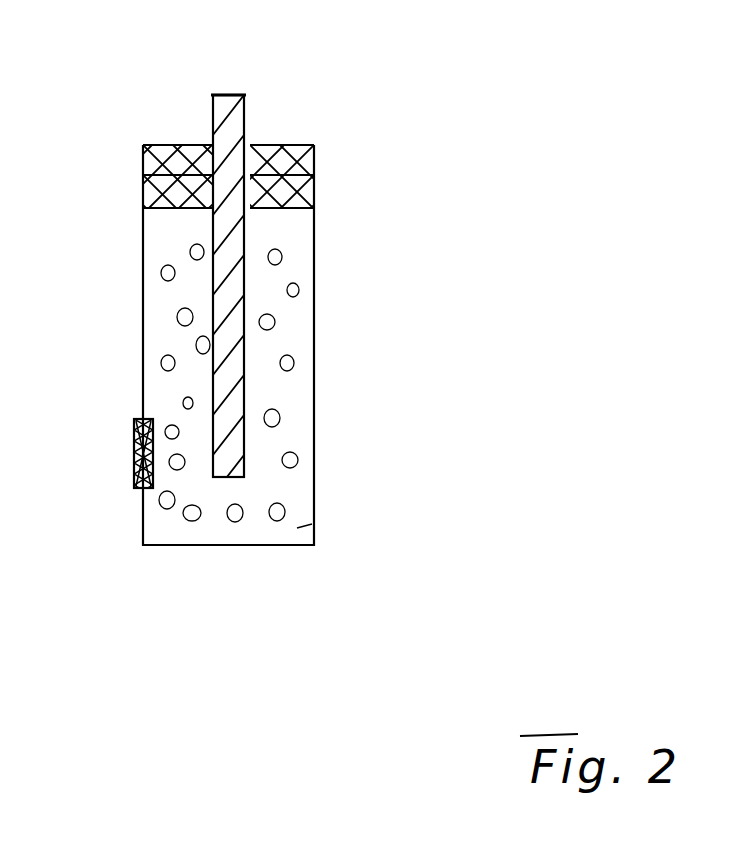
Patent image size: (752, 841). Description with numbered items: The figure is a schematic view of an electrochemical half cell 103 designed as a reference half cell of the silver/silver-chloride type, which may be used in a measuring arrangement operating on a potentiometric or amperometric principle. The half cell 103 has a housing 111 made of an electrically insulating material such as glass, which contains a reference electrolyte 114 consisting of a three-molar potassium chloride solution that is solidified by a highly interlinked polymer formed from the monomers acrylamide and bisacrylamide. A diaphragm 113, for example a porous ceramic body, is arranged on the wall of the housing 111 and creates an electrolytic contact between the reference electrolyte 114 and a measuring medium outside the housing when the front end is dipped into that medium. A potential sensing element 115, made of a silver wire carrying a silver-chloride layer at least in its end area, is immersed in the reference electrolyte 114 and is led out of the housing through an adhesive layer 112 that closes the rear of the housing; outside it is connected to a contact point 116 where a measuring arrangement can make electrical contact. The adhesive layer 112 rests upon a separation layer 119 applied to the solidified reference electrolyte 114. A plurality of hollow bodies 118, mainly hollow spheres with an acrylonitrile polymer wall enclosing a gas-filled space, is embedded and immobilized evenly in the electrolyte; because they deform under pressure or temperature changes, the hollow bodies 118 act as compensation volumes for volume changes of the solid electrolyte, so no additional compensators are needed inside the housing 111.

The half cell 103 is at (430, 280).
The housing 111 is at (317, 487).
The adhesive layer 112 is at (287, 140).
The diaphragm 113 is at (140, 450).
The reference electrolyte 114 is at (316, 547).
The potential sensing element 115 is at (176, 317).
The contact point 116 is at (233, 93).
The hollow bodies 118 is at (275, 321).
The separation layer 119 is at (306, 185).